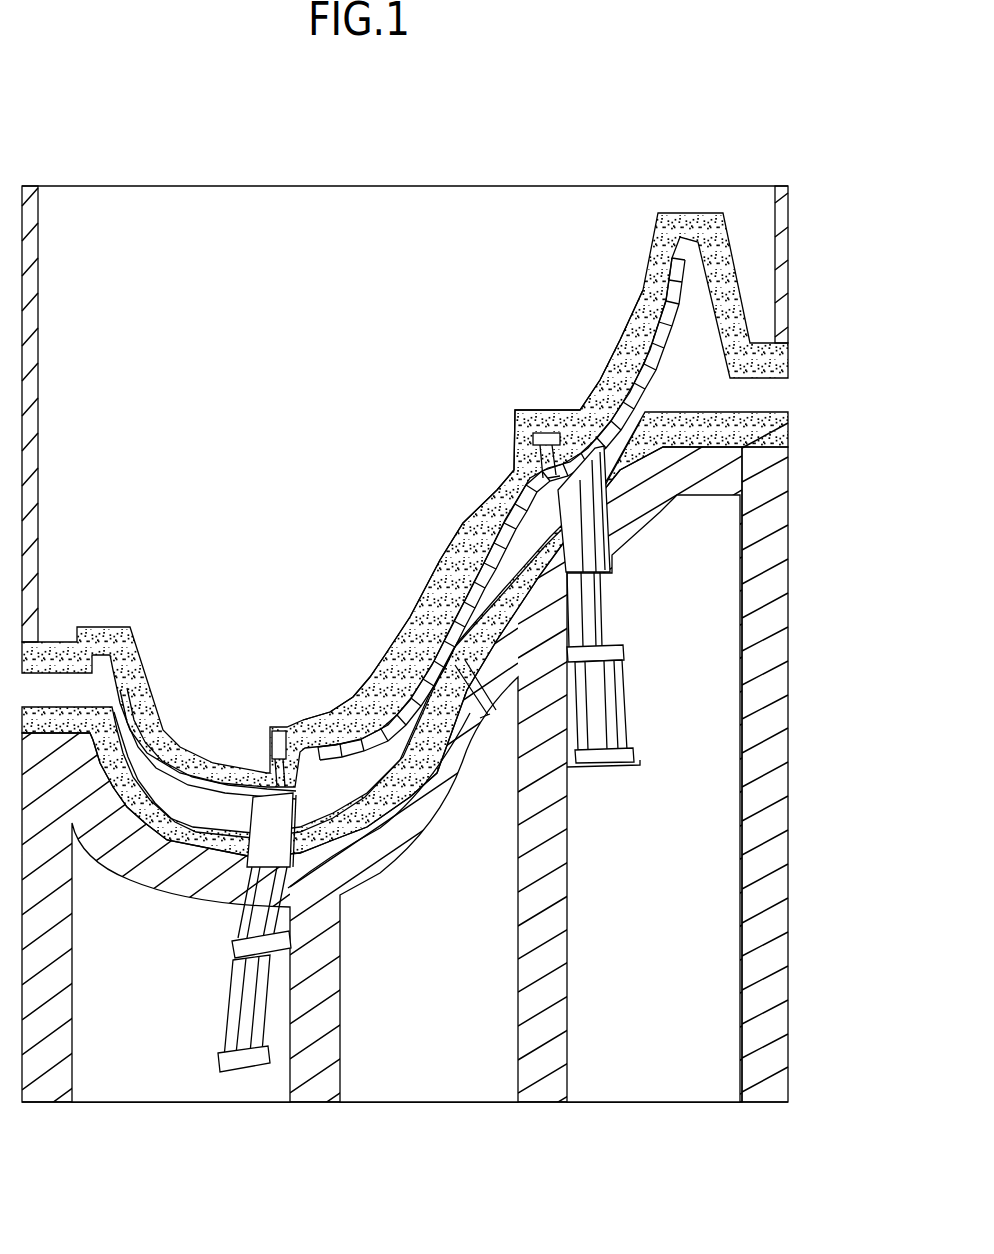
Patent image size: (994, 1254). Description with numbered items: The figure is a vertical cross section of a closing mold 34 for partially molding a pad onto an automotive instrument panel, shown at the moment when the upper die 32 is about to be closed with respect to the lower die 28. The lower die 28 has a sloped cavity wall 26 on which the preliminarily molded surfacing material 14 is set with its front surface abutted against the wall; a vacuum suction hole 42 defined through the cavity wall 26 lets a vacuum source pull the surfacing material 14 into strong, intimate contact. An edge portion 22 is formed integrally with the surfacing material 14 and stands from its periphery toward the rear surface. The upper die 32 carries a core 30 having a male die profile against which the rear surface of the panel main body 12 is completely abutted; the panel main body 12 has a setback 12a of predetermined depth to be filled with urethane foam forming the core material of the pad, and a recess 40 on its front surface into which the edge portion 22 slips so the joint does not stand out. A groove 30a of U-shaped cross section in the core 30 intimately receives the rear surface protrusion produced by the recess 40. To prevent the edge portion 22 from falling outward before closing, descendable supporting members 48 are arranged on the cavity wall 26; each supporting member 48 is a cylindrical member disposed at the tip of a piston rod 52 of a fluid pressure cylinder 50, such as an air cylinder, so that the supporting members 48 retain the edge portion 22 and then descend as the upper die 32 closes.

The closing mold 34 is at (173, 157).
The panel main body 12 is at (633, 310).
The setback 12a is at (447, 557).
The surfacing material 14 is at (380, 802).
The edge portion 22 is at (497, 485).
The cavity wall 26 is at (403, 782).
The lower die 28 is at (790, 792).
The core 30 is at (387, 647).
The groove 30a is at (537, 436).
The upper die 32 is at (790, 283).
The recess 40 is at (522, 432).
The vacuum suction hole 42 is at (483, 722).
The supporting member 48 is at (613, 558).
The fluid pressure cylinder 50 is at (608, 703).
The piston rod 52 is at (597, 619).